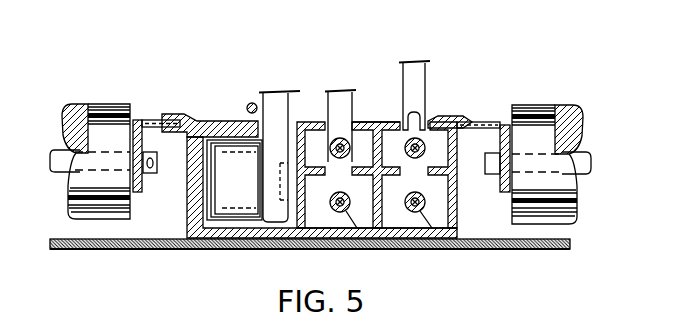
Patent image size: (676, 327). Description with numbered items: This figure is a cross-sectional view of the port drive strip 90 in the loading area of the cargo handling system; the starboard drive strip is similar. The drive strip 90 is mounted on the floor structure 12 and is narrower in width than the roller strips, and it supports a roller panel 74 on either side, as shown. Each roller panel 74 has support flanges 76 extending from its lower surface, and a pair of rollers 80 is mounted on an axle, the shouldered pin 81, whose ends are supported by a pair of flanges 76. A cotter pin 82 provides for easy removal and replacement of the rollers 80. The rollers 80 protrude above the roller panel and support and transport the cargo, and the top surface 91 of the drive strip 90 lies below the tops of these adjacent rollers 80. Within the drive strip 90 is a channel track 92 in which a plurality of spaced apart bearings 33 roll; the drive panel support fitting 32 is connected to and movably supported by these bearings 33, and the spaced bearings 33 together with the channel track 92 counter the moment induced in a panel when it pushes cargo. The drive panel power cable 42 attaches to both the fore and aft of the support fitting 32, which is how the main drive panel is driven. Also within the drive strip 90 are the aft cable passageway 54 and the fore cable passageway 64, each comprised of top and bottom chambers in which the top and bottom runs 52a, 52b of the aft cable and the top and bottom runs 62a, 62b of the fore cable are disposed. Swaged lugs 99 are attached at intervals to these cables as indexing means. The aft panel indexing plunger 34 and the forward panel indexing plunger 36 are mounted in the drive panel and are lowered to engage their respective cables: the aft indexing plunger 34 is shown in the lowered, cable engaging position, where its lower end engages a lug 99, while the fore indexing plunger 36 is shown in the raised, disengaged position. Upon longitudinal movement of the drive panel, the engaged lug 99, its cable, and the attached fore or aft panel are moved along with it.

The floor structure 12 is at (522, 257).
The drive panel support fitting 32 is at (276, 91).
The bearings 33 is at (231, 152).
The aft panel indexing plunger 34 is at (340, 95).
The forward panel indexing plunger 36 is at (420, 61).
The drive panel power cable 42 is at (250, 103).
The top run of aft cable 52a is at (356, 121).
The bottom run of aft cable 52b is at (360, 252).
The aft cable passageway 54 is at (360, 100).
The top run of fore cable 62a is at (428, 125).
The bottom run of fore cable 62b is at (436, 252).
The fore cable passageway 64 is at (433, 110).
The roller panel 74 is at (141, 98).
The support flanges 76 is at (141, 195).
The rollers 80 is at (95, 103).
The shouldered pin 81 is at (60, 174).
The cotter pin 82 is at (157, 172).
The port drive strip 90 is at (480, 72).
The top surface 91 is at (207, 120).
The channel track 92 is at (208, 91).
The swaged lugs 99 is at (465, 201).